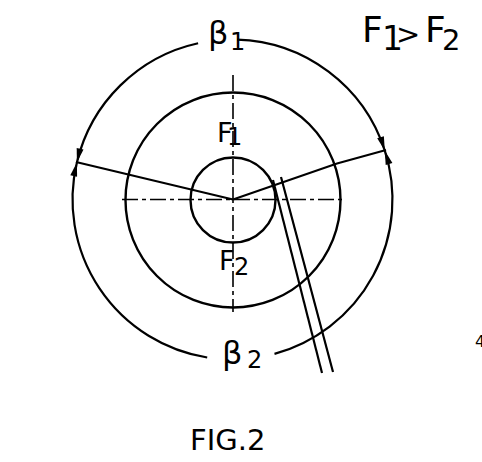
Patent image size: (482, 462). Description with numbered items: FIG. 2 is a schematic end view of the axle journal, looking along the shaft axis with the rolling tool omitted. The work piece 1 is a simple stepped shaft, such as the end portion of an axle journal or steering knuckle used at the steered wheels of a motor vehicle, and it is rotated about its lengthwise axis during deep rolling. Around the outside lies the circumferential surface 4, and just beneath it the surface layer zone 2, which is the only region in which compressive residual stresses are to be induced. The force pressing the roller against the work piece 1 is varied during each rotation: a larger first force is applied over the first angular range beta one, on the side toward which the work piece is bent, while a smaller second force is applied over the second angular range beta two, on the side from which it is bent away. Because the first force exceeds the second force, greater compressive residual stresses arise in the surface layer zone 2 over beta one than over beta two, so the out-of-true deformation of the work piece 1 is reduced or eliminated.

The work piece 1 is at (205, 218).
The surface layer zone 2 is at (290, 377).
The circumferential surface 4 is at (206, 250).